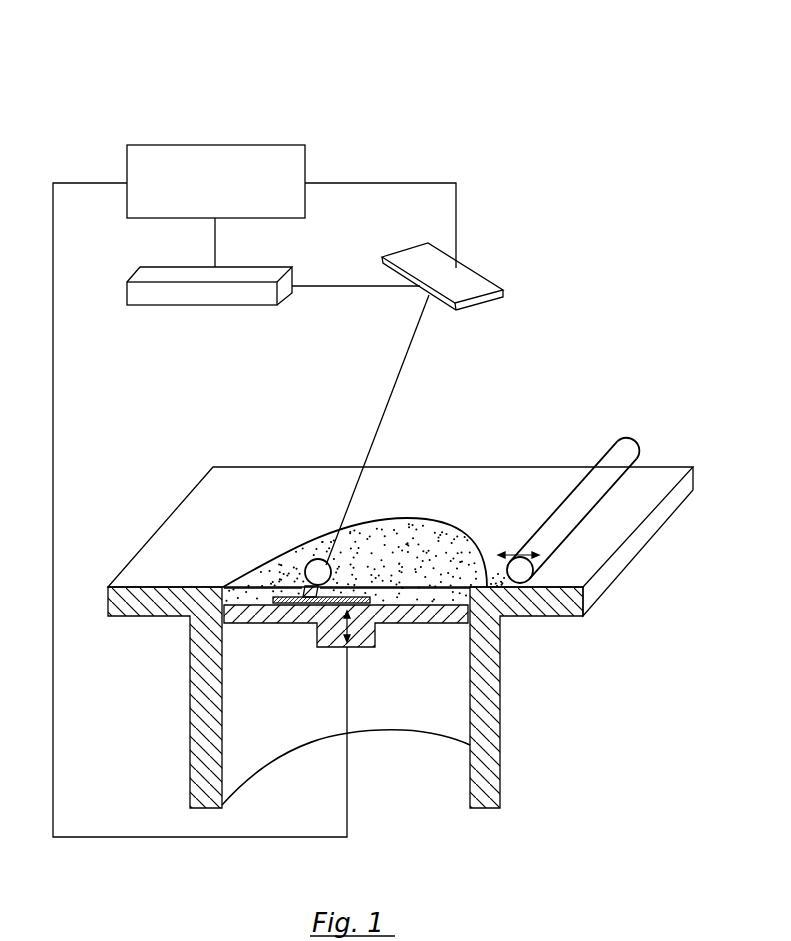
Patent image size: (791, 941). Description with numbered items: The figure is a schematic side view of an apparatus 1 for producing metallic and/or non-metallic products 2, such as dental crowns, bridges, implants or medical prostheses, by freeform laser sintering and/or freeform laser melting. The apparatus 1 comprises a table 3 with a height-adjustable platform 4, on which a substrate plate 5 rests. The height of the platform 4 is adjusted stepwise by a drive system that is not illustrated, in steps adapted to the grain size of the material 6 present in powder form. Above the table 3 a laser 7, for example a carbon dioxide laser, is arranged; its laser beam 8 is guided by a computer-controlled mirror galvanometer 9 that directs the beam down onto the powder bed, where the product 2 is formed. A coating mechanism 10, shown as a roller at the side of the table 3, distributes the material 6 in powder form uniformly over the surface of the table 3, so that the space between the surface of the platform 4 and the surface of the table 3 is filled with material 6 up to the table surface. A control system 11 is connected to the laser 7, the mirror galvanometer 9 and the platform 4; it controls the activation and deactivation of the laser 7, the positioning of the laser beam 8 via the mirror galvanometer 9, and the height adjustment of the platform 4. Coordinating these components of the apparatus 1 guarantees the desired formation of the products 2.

The apparatus 1 is at (580, 69).
The product 2 is at (318, 572).
The table 3 is at (448, 468).
The height-adjustable platform 4 is at (418, 624).
The substrate plate 5 is at (280, 597).
The material in powder form 6 is at (496, 577).
The laser 7 is at (243, 305).
The laser beam 8 is at (339, 288).
The mirror galvanometer 9 is at (470, 273).
The coating mechanism 10 is at (637, 448).
The control system 11 is at (305, 150).